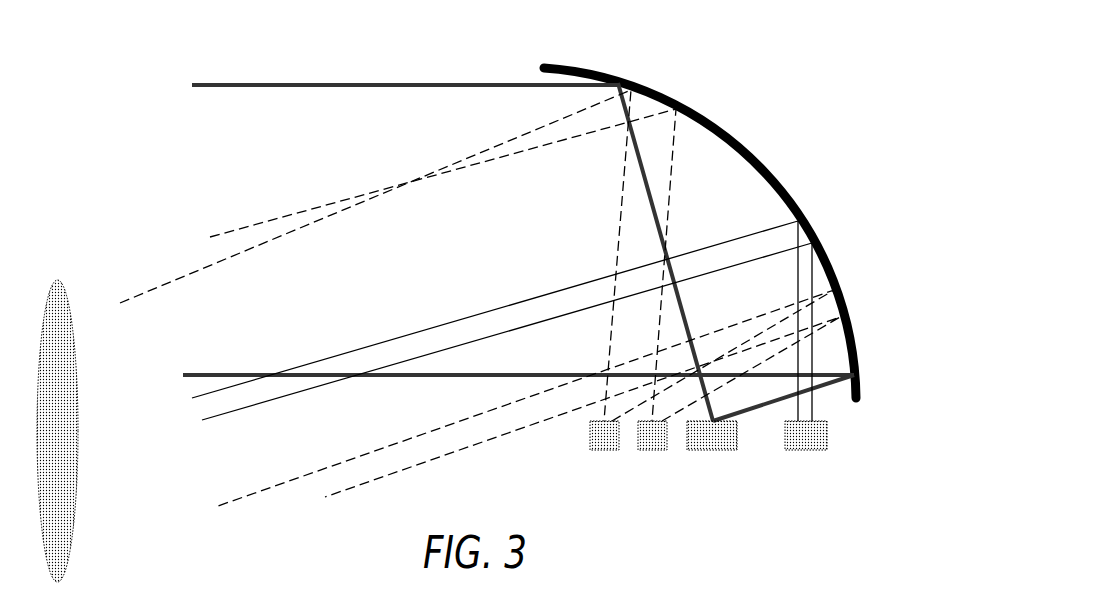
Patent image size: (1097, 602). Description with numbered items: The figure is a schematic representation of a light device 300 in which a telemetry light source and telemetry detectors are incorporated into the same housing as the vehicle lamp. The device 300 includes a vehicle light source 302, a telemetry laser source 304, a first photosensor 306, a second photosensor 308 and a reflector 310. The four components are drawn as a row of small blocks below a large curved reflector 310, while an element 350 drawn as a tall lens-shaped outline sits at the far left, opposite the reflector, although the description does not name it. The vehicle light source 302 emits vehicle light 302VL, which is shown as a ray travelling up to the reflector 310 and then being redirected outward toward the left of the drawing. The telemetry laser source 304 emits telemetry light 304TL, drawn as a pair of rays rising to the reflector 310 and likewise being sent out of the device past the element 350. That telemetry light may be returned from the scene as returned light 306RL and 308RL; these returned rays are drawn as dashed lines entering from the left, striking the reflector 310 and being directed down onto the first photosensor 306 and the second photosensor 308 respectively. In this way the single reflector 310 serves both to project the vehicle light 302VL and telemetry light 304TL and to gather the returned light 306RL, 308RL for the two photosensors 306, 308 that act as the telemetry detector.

The device 300 is at (113, 44).
The vehicle light source 302 is at (697, 451).
The telemetry laser source 304 is at (792, 451).
The first photosensor 306 is at (647, 451).
The second photosensor 308 is at (605, 451).
The reflector 310 is at (717, 120).
The lens 350 is at (76, 517).
The vehicle light 302VL is at (280, 88).
The telemetry light 304TL is at (413, 333).
The returned light 306RL is at (222, 233).
The returned light 308RL is at (155, 290).